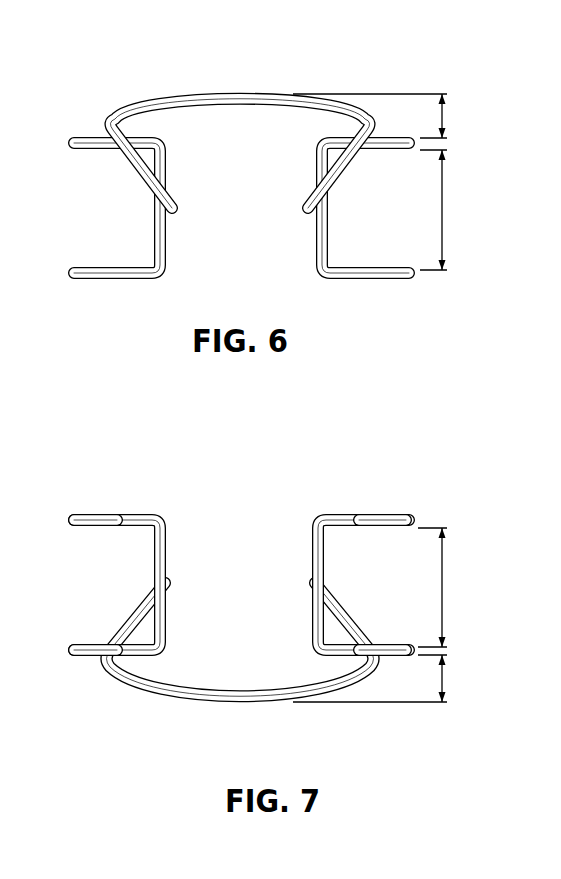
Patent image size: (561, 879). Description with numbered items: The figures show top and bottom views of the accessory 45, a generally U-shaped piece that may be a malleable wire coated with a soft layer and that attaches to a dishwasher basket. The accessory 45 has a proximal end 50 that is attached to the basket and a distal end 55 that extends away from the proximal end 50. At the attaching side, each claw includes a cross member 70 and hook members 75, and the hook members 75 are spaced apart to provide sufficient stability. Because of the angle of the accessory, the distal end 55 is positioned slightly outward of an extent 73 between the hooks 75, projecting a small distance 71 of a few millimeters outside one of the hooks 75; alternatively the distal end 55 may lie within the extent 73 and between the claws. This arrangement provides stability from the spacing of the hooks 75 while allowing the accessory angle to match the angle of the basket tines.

In FIG. 6, the accessory 45 is at (241, 194).
In FIG. 7, the accessory 45 is at (288, 609).
In FIG. 7, the proximal end 50 is at (172, 587).
In FIG. 6, the distal end 55 is at (263, 93).
In FIG. 7, the distal end 55 is at (262, 702).
In FIG. 6, the cross member 70 is at (378, 274).
In FIG. 7, the cross member 70 is at (163, 530).
In FIG. 6, the small distance 71 is at (447, 122).
In FIG. 7, the small distance 71 is at (444, 680).
In FIG. 6, the extent 73 is at (446, 193).
In FIG. 7, the extent 73 is at (442, 603).
In FIG. 7, the hook member 75 is at (82, 518).